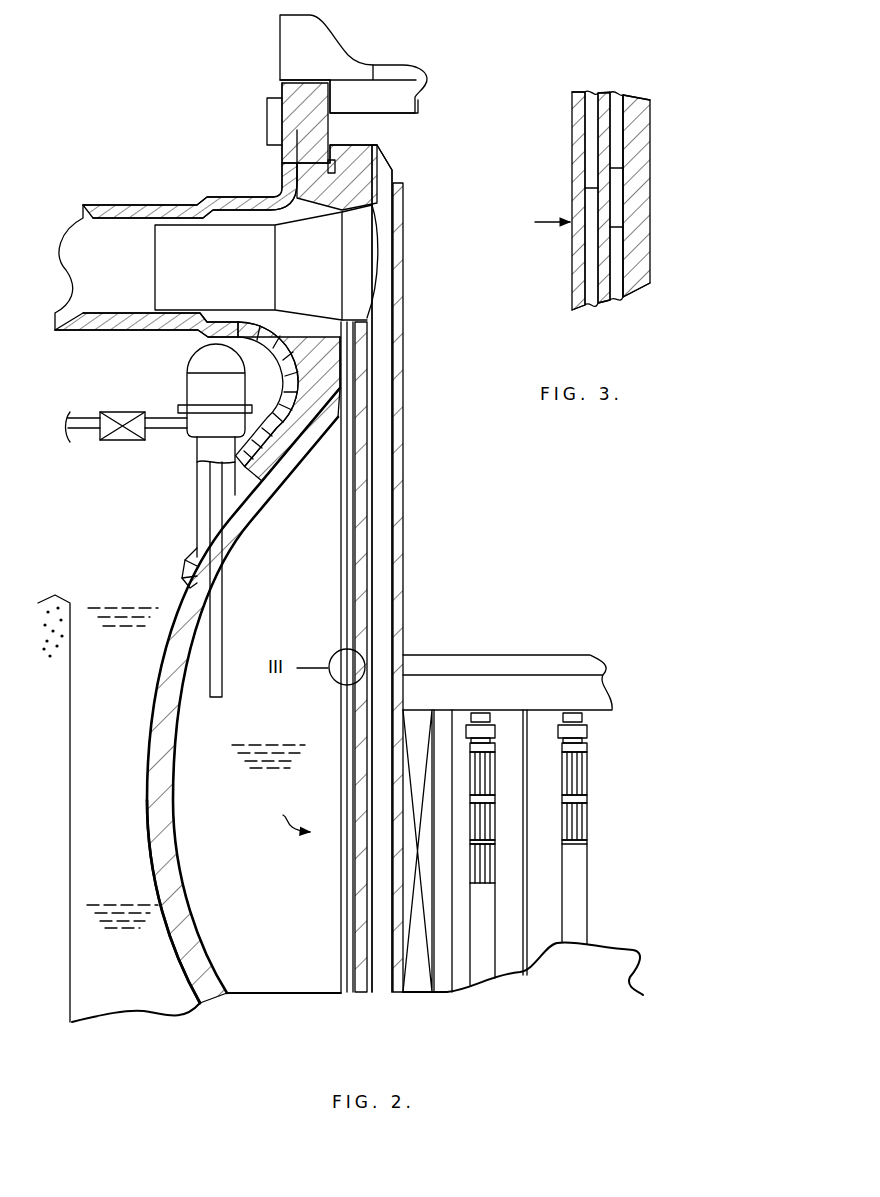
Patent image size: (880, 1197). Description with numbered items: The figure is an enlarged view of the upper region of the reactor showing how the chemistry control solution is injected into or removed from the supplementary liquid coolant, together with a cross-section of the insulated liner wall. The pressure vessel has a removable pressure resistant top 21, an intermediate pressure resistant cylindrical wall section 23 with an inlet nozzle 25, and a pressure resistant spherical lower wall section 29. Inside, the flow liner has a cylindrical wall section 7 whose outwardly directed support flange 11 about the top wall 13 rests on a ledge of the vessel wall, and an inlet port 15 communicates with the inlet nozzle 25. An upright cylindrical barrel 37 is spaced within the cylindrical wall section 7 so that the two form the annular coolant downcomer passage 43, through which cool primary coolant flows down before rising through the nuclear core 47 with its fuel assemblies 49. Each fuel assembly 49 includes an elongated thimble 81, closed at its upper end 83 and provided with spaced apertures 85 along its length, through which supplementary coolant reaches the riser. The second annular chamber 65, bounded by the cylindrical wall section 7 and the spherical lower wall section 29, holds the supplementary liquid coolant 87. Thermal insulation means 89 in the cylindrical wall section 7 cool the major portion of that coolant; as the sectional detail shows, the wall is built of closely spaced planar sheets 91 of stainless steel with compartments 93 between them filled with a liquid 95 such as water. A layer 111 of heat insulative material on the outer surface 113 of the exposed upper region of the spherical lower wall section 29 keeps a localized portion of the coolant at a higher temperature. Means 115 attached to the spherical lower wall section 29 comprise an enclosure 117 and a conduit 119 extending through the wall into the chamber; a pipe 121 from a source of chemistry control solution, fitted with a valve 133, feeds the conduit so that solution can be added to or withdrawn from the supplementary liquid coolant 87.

In FIG. 2, the cylindrical wall section 7 is at (353, 552).
In FIG. 3, the cylindrical wall section 7 is at (650, 123).
In FIG. 2, the outwardly directed support flange 11 is at (297, 163).
In FIG. 2, the top wall 13 is at (293, 117).
In FIG. 2, the inlet port 15 is at (383, 276).
In FIG. 2, the removable pressure resistant top 21 is at (268, 52).
In FIG. 2, the intermediate pressure resistant cylindrical wall section 23 is at (382, 126).
In FIG. 2, the inlet nozzle 25 is at (107, 238).
In FIG. 2, the pressure resistant spherical lower wall section 29 is at (158, 800).
In FIG. 2, the upright cylindrical barrel 37 is at (397, 547).
In FIG. 2, the annular coolant downcomer passage 43 is at (383, 510).
In FIG. 2, the nuclear core 47 is at (557, 642).
In FIG. 2, the fuel assembly 49 is at (575, 777).
In FIG. 2, the second annular chamber 65 is at (258, 940).
In FIG. 2, the elongated thimble 81 is at (527, 860).
In FIG. 2, the upper end 83 is at (450, 710).
In FIG. 2, the spaced apertures 85 is at (452, 905).
In FIG. 2, the supplementary liquid coolant 87 is at (262, 887).
In FIG. 2, the thermal insulation means 89 is at (283, 819).
In FIG. 3, the thermal insulation means 89 is at (539, 222).
In FIG. 3, the planar sheets 91 is at (712, 170).
In FIG. 3, the compartments 93 is at (615, 227).
In FIG. 3, the liquid 95 is at (615, 263).
In FIG. 2, the layer of heat insulative material 111 is at (195, 550).
In FIG. 2, the outer surface 113 is at (190, 570).
In FIG. 2, the means for injection and removal of chemistry control solution 115 is at (177, 382).
In FIG. 2, the enclosure 117 is at (240, 453).
In FIG. 2, the conduit 119 is at (222, 575).
In FIG. 2, the pipe 121 is at (87, 412).
In FIG. 2, the valve 133 is at (118, 442).